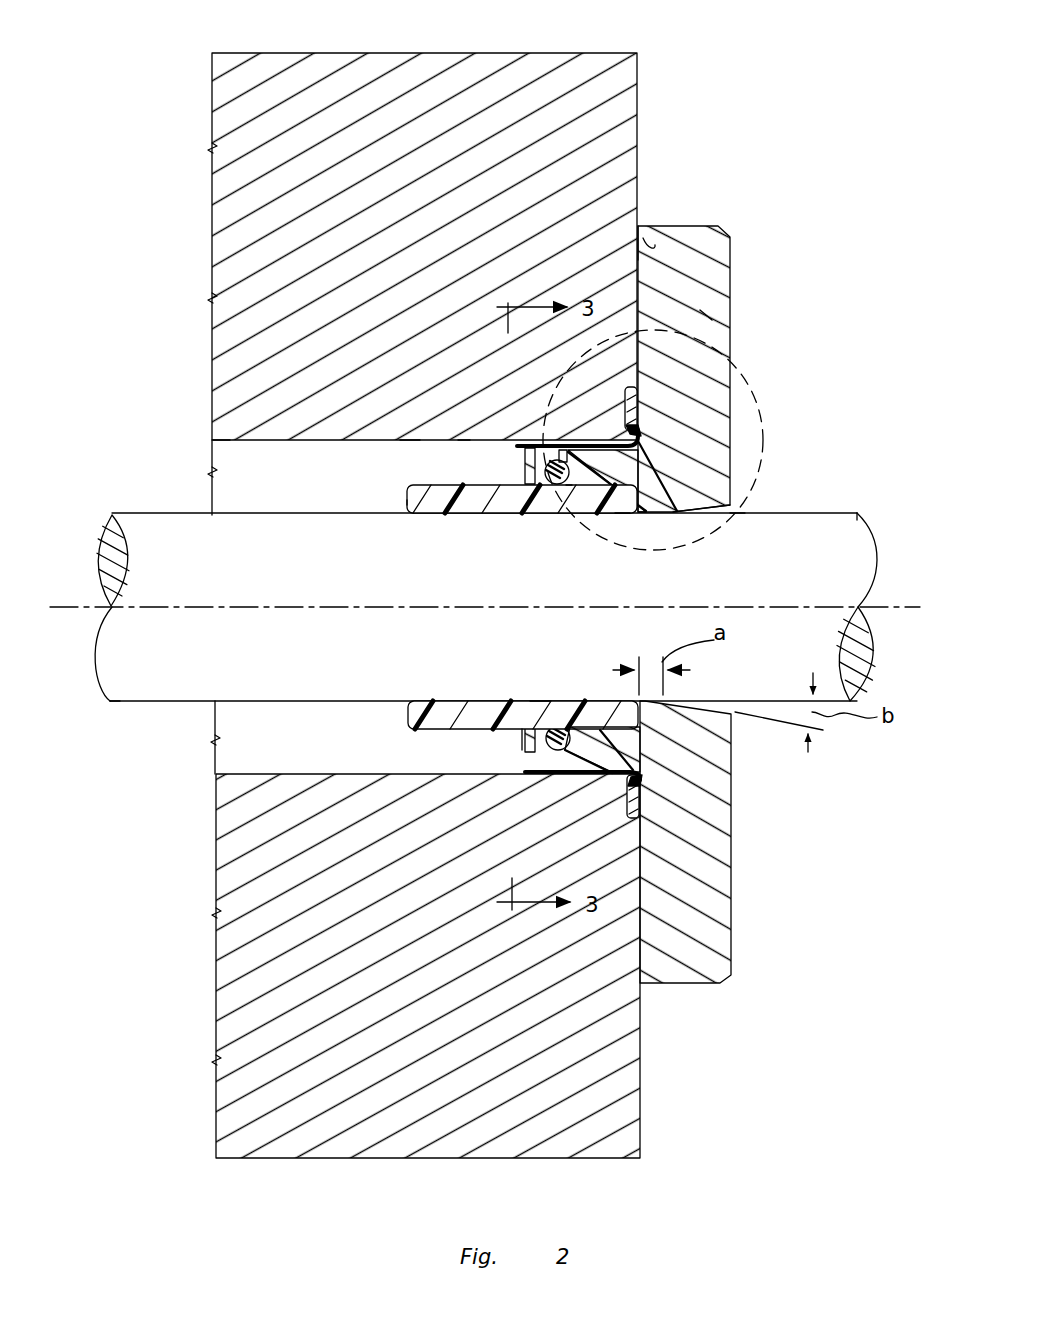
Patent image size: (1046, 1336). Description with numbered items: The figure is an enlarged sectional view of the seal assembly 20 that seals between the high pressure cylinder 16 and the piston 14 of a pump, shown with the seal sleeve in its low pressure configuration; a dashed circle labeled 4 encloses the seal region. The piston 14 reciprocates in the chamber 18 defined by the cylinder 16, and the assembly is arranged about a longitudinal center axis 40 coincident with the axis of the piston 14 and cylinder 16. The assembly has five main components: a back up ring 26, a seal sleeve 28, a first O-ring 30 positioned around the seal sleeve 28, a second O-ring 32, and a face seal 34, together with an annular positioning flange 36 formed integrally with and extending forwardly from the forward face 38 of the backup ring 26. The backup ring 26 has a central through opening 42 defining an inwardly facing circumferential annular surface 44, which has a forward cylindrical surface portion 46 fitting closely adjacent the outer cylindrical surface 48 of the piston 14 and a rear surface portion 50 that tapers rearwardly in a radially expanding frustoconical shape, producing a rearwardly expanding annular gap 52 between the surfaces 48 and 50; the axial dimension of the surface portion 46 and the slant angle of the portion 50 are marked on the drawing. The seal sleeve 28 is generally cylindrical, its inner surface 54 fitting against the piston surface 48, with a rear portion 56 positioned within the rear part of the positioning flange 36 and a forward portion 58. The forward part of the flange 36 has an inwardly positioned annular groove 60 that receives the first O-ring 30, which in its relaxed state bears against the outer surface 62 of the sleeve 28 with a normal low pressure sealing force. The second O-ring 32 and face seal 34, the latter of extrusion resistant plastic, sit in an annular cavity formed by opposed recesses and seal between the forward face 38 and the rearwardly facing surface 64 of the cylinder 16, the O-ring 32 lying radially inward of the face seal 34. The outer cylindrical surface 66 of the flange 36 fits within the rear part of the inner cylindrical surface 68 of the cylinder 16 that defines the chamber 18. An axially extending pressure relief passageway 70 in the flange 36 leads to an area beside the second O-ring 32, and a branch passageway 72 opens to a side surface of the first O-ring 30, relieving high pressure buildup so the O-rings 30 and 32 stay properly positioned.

The piston 14 is at (778, 520).
The high pressure cylinder 16 is at (522, 53).
The chamber 18 is at (265, 468).
The seal assembly 20 is at (750, 773).
The back up ring 26 is at (715, 250).
The seal sleeve 28 is at (540, 701).
The first O-ring 30 is at (522, 745).
The second O-ring 32 is at (730, 416).
The face seal 34 is at (700, 350).
The positioning flange 36 is at (558, 485).
The forward face 38 is at (700, 315).
The longitudinal center axis 40 is at (108, 577).
The central through opening 42 is at (682, 520).
The inwardly facing circumferential annular surface 44 is at (700, 605).
The forward cylindrical surface portion 46 is at (622, 515).
The outer cylindrical surface 48 is at (850, 512).
The rear surface portion 50 is at (737, 507).
The annular gap 52 is at (760, 478).
The inner surface 54 is at (478, 505).
The rear portion 56 is at (566, 488).
The forward portion 58 is at (440, 507).
The annular groove 60 is at (552, 440).
The outer surface 62 is at (458, 440).
The rearwardly facing surface 64 is at (643, 238).
The outer cylindrical surface 66 is at (578, 778).
The inner cylindrical surface 68 is at (412, 440).
The pressure relief passageway 70 is at (515, 440).
The branch passageway 72 is at (566, 440).
The detail circle FIG. 4 is at (775, 382).